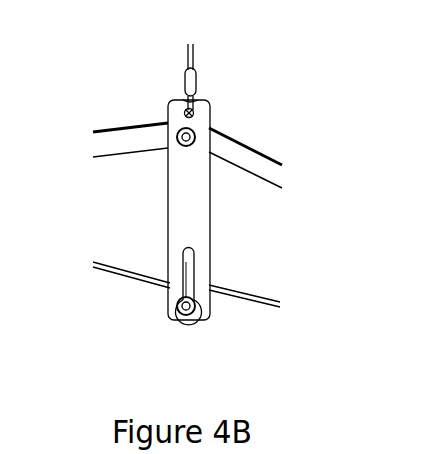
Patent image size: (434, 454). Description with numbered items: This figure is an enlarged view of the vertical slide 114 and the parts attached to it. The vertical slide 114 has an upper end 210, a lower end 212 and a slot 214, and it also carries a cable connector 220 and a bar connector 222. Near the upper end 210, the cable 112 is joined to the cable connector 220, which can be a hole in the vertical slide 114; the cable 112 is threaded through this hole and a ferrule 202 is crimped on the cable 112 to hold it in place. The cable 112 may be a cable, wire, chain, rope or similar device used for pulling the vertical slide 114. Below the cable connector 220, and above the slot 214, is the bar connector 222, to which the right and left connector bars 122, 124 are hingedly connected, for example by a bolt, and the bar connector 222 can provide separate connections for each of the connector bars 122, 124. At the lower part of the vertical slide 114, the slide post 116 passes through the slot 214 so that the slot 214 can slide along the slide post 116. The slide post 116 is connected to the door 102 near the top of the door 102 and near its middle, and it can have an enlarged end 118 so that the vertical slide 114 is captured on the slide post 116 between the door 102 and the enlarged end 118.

The door 102 is at (253, 295).
The cable 112 is at (185, 55).
The vertical slide 114 is at (200, 202).
The slide post 116 is at (177, 313).
The enlarged end 118 is at (178, 307).
The connector bar 122 is at (265, 155).
The connector bar 124 is at (112, 133).
The ferrule 202 is at (196, 82).
The upper end 210 is at (168, 103).
The lower end 212 is at (195, 318).
The slot 214 is at (190, 270).
The cable connector 220 is at (193, 112).
The bar connector 222 is at (180, 145).